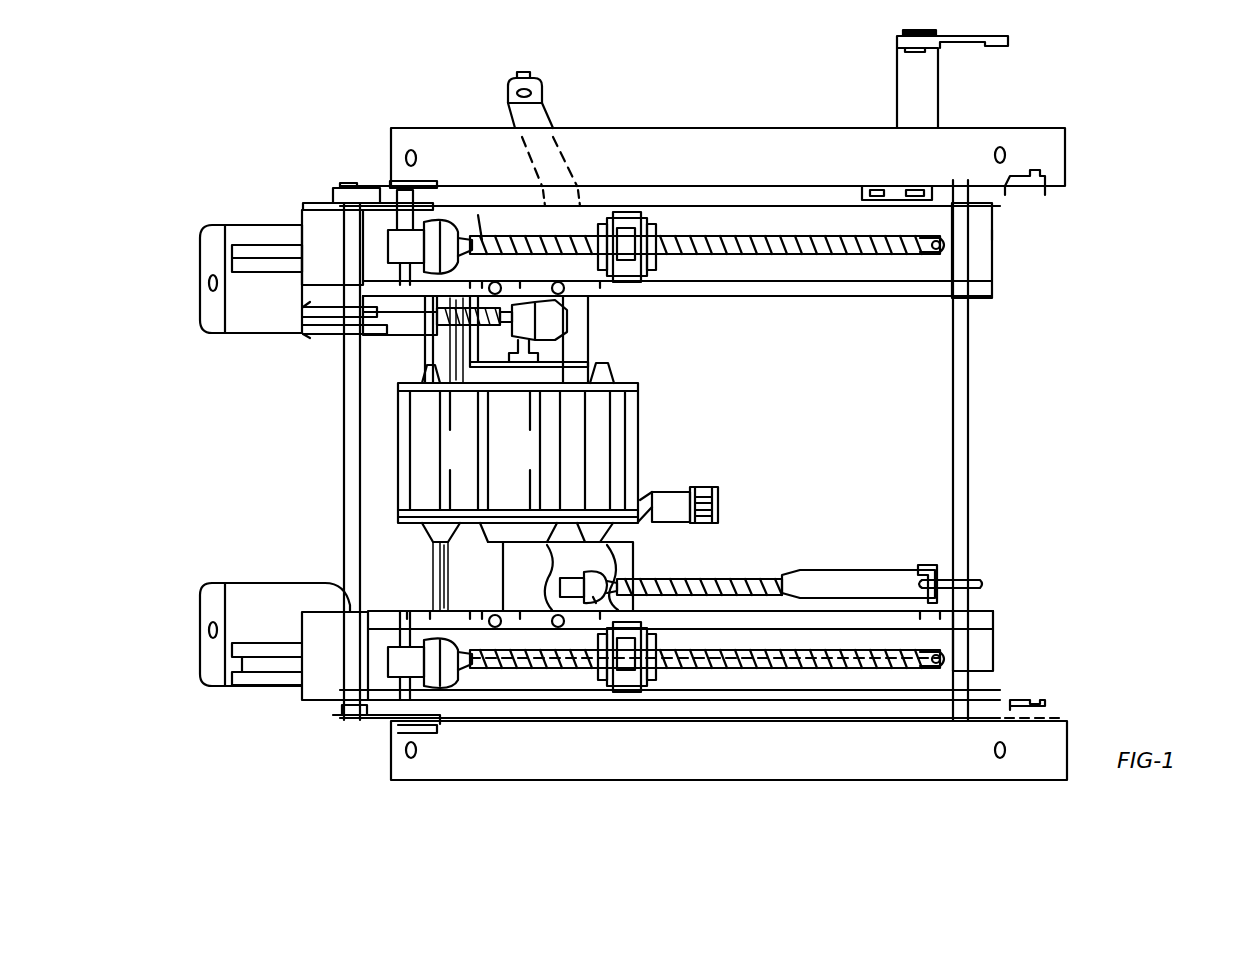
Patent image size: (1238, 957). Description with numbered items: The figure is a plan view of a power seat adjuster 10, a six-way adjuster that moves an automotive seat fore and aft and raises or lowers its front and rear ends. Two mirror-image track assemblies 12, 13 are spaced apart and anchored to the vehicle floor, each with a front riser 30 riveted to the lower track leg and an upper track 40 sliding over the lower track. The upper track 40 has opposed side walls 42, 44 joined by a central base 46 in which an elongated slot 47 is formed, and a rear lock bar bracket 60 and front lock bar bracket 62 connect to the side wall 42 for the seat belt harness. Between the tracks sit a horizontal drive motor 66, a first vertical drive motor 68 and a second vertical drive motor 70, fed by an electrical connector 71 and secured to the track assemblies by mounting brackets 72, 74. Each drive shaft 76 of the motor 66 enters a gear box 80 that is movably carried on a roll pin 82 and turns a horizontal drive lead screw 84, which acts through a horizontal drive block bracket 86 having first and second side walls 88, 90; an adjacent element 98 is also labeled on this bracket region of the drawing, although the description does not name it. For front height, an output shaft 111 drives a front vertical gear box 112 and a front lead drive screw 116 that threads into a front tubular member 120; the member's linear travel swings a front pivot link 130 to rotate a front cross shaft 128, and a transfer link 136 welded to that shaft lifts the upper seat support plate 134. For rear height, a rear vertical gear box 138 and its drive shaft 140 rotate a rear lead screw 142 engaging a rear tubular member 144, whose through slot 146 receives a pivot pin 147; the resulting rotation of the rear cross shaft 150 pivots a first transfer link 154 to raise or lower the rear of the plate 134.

The power seat adjuster 10 is at (1195, 335).
The track assembly 12 is at (235, 178).
The track assembly 13 is at (255, 735).
The front riser 30 is at (208, 245).
The upper track 40 is at (1105, 268).
The side wall 42 is at (990, 205).
The side wall 44 is at (985, 290).
The central base 46 is at (995, 232).
The elongated slot 47 is at (937, 252).
The rear lock bar bracket 60 is at (905, 58).
The front lock bar bracket 62 is at (538, 115).
The horizontal drive motor 66 is at (410, 455).
The first vertical drive motor 68 is at (545, 428).
The second vertical drive motor 70 is at (630, 437).
The electrical connector 71 is at (712, 485).
The mounting bracket 72 is at (590, 313).
The mounting bracket 74 is at (632, 553).
The drive shaft 76 is at (437, 350).
The horizontal drive transmission means 80 is at (440, 235).
The roll pin 82 is at (400, 240).
The horizontal drive lead screw 84 is at (868, 665).
The horizontal drive block bracket 86 is at (617, 220).
The first side wall 88 is at (640, 235).
The second side wall 90 is at (695, 265).
The nut flange 98 is at (625, 255).
The output shaft 111 is at (478, 230).
The front vertical drive transmission means 112 is at (528, 330).
The front lead drive screw 116 is at (440, 400).
The front tubular member 120 is at (360, 318).
The front cross shaft 128 is at (347, 432).
The front pivot link 130 is at (320, 322).
The upper seat support plate 134 is at (445, 150).
The transfer link 136 is at (335, 200).
The rear vertical drive transmission means 138 is at (595, 605).
The drive shaft 140 is at (590, 572).
The rear lead screw 142 is at (720, 580).
The rear tubular member 144 is at (820, 572).
The through slot 146 is at (1015, 548).
The pivot pin 147 is at (930, 575).
The rear cross shaft 150 is at (965, 440).
The first transfer link 154 is at (1035, 180).